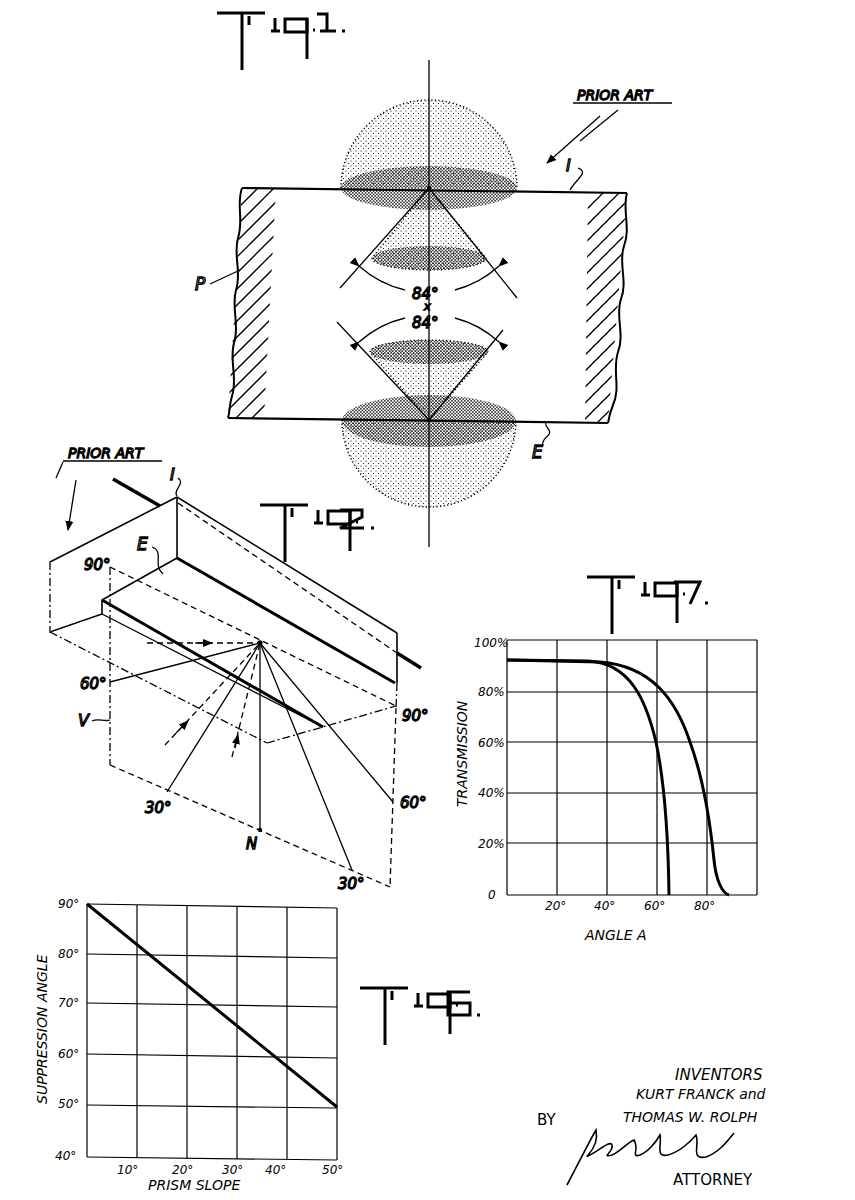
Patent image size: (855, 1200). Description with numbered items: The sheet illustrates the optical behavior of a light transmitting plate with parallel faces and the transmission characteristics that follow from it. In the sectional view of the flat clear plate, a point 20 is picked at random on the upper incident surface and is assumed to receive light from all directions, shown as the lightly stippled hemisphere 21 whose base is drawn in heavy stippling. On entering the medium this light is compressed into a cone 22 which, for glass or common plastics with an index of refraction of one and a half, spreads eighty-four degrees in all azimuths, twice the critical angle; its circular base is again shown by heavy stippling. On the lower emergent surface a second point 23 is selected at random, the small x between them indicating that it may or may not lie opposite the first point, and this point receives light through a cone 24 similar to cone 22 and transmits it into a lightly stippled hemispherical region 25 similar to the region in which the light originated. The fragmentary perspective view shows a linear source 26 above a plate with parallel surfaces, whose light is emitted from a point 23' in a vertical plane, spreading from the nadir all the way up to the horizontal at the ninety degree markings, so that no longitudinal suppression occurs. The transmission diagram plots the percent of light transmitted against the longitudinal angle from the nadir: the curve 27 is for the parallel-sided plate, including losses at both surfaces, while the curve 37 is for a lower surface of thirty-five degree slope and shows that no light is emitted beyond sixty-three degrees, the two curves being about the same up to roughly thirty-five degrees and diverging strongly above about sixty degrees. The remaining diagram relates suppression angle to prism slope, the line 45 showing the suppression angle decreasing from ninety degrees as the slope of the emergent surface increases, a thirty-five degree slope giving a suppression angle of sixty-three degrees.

In FIG. 1, the point 20 is at (431, 189).
In FIG. 1, the hemisphere 21 is at (482, 128).
In FIG. 1, the cone 22 is at (467, 241).
In FIG. 1, the point 23 is at (429, 421).
In FIG. 1, the cone 24 is at (450, 380).
In FIG. 1, the hemispherical region 25 is at (353, 465).
In FIG. 2, the linear source 26 is at (122, 488).
In FIG. 2, the point 23' is at (251, 751).
In FIG. 7, the curve 27 is at (713, 840).
In FIG. 7, the curve 37 is at (663, 816).
In FIG. 6, the line 45 is at (204, 992).